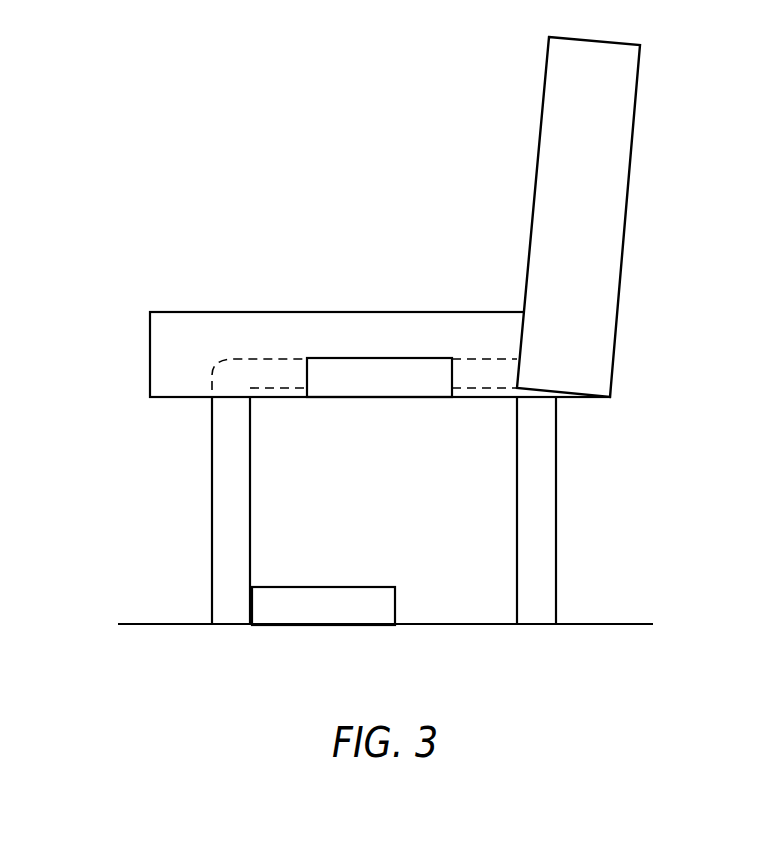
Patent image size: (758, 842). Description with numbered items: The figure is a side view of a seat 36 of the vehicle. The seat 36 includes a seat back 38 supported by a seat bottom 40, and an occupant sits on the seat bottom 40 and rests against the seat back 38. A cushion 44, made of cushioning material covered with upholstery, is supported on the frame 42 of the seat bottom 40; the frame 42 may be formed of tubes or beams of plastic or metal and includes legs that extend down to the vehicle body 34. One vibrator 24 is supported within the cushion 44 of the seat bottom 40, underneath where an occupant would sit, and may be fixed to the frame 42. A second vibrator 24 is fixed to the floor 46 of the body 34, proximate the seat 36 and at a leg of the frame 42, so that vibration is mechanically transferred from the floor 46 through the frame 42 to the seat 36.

The seat 36 is at (186, 120).
The seat back 38 is at (538, 147).
The seat bottom 40 is at (212, 311).
The cushion 44 is at (255, 337).
The vibrator 24 is at (379, 397).
The frame 42 is at (212, 516).
The vehicle body 34 is at (618, 624).
The floor 46 is at (148, 624).